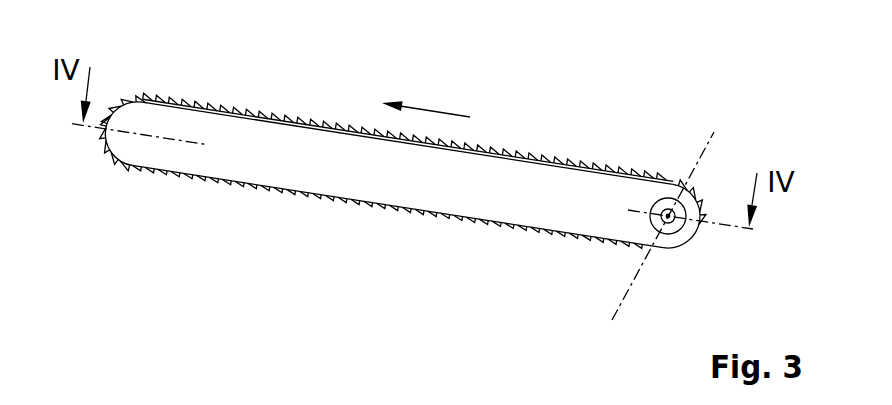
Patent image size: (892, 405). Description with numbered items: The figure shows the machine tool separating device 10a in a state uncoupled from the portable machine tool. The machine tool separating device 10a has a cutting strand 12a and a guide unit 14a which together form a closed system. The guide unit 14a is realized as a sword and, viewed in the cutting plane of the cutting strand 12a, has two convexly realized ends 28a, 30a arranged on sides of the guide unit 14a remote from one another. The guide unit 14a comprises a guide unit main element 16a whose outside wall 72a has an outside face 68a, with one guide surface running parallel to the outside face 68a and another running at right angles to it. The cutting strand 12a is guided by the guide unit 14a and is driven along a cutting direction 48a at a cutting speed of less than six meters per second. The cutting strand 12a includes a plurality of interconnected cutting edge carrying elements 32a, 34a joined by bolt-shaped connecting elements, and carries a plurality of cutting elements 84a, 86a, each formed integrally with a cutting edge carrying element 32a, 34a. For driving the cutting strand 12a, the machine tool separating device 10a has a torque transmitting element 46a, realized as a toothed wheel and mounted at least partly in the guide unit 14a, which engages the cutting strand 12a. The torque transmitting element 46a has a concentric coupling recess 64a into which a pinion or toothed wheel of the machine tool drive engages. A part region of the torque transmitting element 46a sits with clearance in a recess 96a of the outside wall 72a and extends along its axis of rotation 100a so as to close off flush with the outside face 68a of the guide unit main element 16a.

The machine tool separating device 10a is at (431, 167).
The cutting strand 12a is at (190, 104).
The guide unit 14a is at (232, 166).
The guide unit main element 16a is at (295, 167).
The convexly realized end 28a is at (98, 180).
The convexly realized end 30a is at (715, 260).
The cutting edge carrying element 32a is at (233, 110).
The cutting edge carrying element 34a is at (245, 113).
The torque transmitting element 46a is at (667, 234).
The cutting direction 48a is at (433, 112).
The coupling recess 64a is at (667, 212).
The outside face 68a is at (477, 196).
The outside wall 72a is at (367, 180).
The cutting element 84a is at (240, 111).
The cutting element 86a is at (250, 114).
The recess 96a is at (690, 243).
The axis of rotation 100a is at (713, 134).